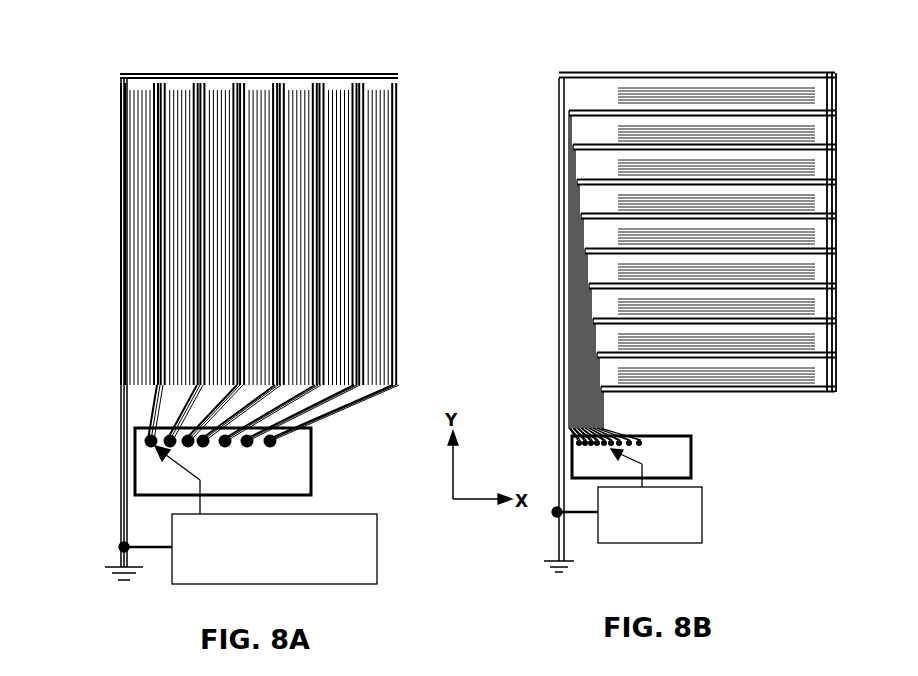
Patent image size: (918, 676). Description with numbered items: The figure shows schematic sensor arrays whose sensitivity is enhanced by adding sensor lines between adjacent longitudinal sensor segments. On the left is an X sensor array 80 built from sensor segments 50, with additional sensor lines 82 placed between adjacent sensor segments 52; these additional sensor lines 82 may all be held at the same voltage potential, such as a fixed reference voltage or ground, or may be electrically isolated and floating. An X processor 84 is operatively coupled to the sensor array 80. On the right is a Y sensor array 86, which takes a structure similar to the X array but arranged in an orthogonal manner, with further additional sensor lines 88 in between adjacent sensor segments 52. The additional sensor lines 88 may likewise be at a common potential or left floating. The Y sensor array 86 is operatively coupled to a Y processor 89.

In FIG. 8A, the sensor segments 50 is at (393, 212).
In FIG. 8B, the sensor segments 52 is at (712, 70).
In FIG. 8A, the sensor array 80 is at (403, 313).
In FIG. 8A, the additional sensor lines 82 is at (135, 296).
In FIG. 8A, the X processor 84 is at (311, 488).
In FIG. 8B, the Y sensor array 86 is at (540, 164).
In FIG. 8B, the additional sensor lines 88 is at (690, 137).
In FIG. 8B, the Y processor 89 is at (692, 470).